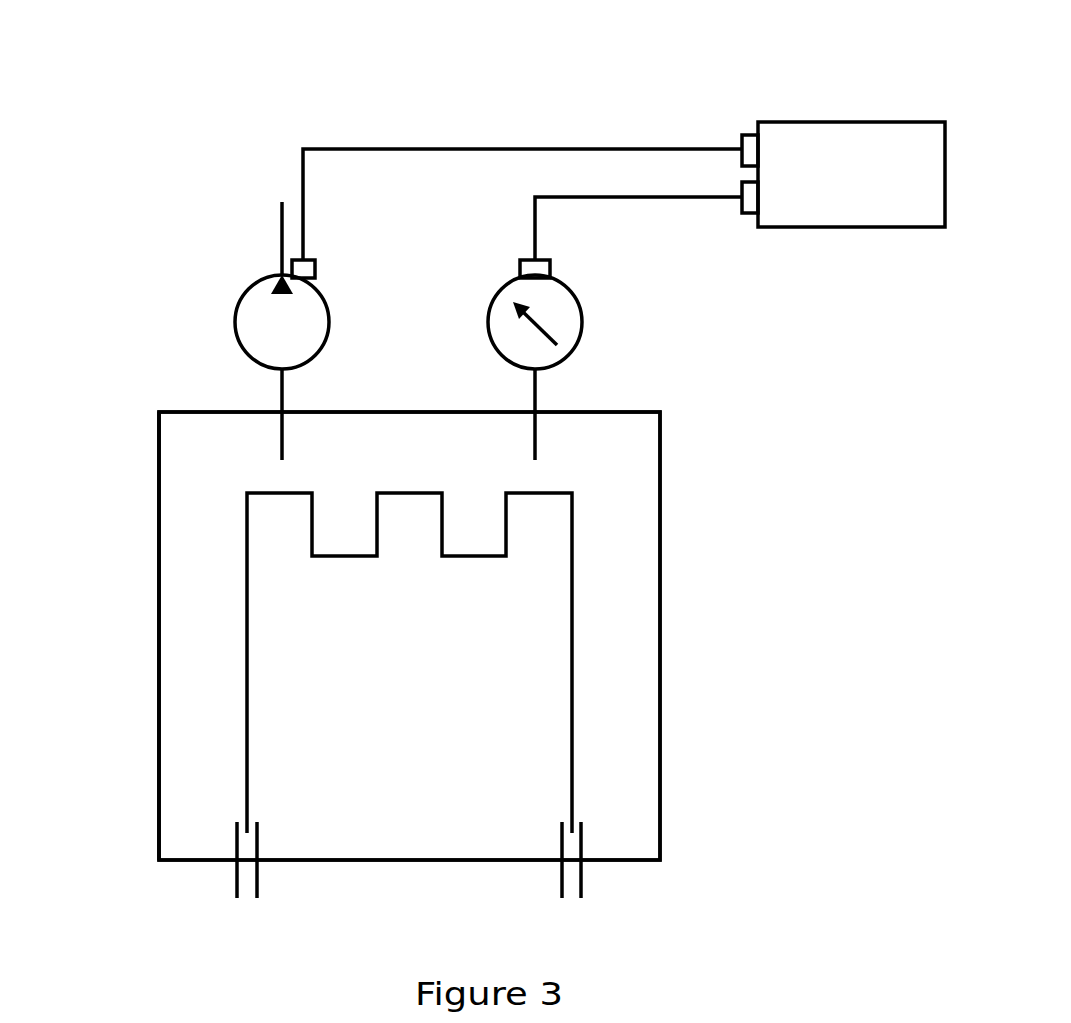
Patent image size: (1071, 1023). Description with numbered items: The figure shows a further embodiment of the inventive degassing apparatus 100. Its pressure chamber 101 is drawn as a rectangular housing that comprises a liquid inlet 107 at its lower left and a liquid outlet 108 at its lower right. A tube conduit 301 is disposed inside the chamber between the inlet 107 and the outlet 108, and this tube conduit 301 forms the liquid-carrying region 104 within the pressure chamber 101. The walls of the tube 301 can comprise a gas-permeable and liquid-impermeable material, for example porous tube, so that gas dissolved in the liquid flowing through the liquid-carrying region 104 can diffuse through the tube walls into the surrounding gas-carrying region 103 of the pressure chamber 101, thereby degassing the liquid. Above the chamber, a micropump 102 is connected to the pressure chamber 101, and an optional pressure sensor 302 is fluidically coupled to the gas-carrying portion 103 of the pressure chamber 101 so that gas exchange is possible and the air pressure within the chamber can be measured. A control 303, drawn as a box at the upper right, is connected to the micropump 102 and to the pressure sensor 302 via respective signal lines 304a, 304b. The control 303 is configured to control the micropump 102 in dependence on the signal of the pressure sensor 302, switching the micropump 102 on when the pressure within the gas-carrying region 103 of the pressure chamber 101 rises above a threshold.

The apparatus 100 is at (97, 436).
The pressure chamber 101 is at (662, 632).
The micropump 102 is at (235, 325).
The gas-carrying region 103 is at (188, 635).
The liquid-carrying region 104 is at (248, 680).
The liquid inlet 107 is at (237, 882).
The liquid outlet 108 is at (582, 882).
The tube conduit 301 is at (570, 687).
The pressure sensor 302 is at (583, 318).
The control 303 is at (848, 122).
The signal line 304a is at (655, 150).
The signal line 304b is at (655, 198).